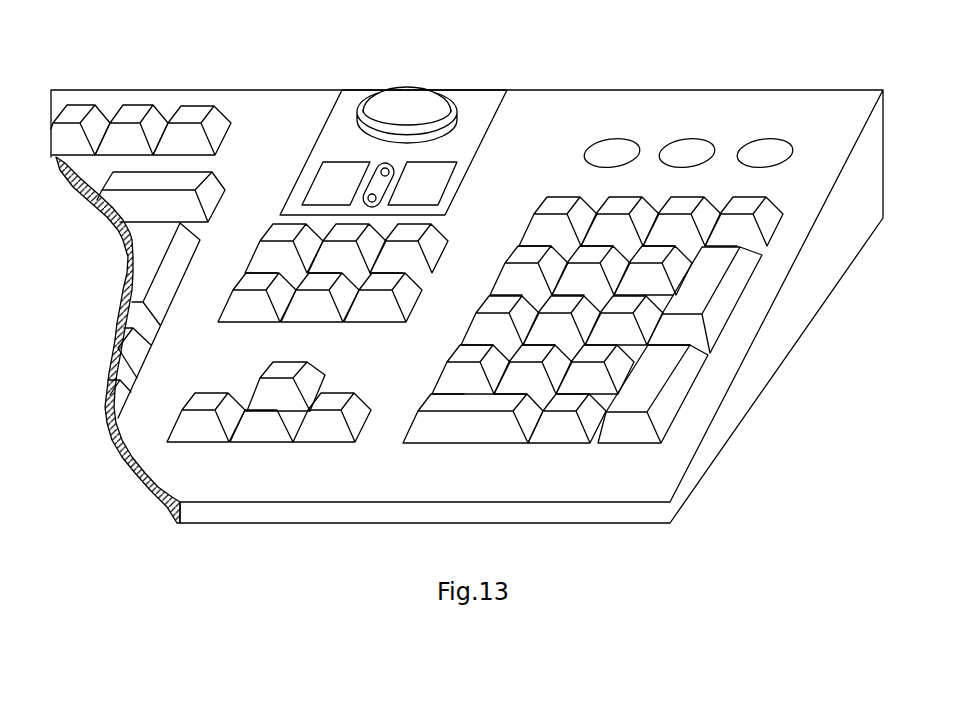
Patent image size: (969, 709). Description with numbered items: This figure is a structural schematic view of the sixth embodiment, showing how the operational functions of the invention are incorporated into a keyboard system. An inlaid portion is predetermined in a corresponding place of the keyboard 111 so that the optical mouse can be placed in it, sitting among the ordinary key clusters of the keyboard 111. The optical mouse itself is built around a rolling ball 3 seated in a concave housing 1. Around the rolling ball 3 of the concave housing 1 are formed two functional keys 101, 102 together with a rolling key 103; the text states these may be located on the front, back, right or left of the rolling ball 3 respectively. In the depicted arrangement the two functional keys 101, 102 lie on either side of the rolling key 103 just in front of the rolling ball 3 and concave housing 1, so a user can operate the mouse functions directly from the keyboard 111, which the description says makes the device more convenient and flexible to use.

The concave housing 1 is at (452, 112).
The rolling ball 3 is at (409, 103).
The functional key 101 is at (320, 190).
The functional key 102 is at (433, 180).
The rolling key 103 is at (370, 182).
The keyboard 111 is at (663, 110).